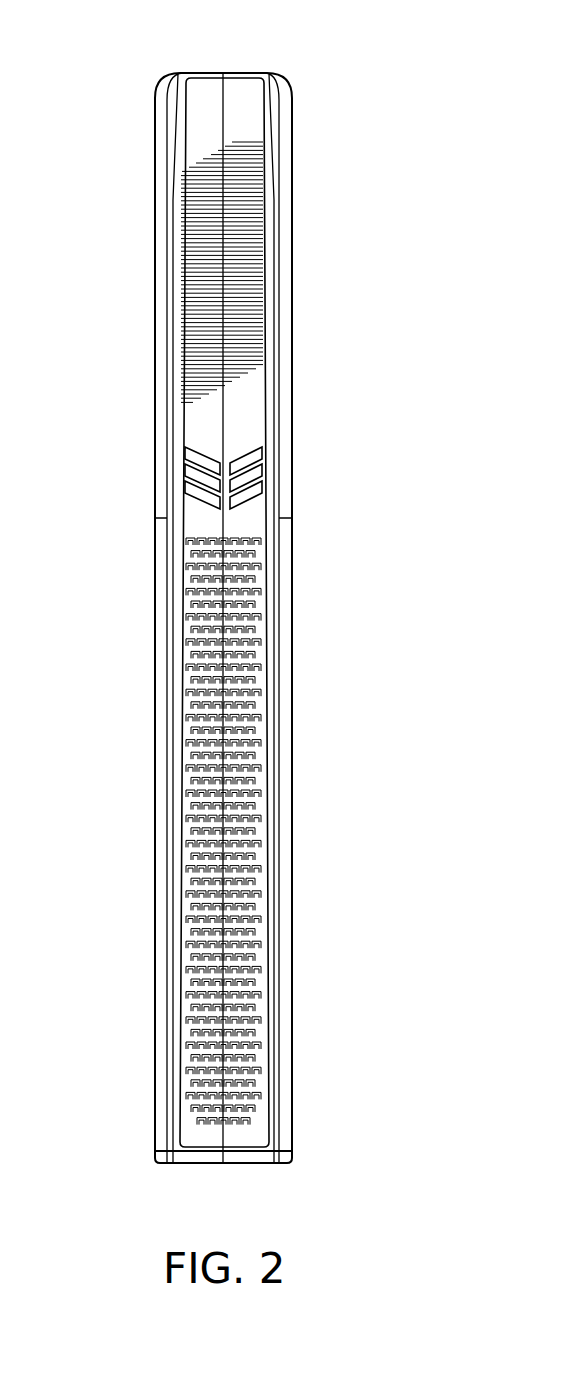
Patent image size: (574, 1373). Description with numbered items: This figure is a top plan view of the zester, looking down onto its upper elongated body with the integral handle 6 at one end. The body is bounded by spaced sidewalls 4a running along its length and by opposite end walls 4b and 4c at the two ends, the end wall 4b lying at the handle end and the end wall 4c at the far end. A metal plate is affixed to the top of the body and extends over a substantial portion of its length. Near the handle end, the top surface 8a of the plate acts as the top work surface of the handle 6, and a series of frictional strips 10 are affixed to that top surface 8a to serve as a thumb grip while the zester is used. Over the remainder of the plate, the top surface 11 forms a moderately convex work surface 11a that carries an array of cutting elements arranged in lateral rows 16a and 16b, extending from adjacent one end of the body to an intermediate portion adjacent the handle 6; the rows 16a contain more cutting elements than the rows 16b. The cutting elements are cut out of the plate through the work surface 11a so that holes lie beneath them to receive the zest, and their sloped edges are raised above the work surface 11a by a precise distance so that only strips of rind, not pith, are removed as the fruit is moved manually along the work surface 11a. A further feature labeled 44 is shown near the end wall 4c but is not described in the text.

The sidewall 4a is at (157, 597).
The end wall 4b is at (224, 72).
The end wall 4c is at (255, 1163).
The handle 6 is at (253, 135).
The top surface 8a is at (250, 258).
The frictional strips 10 is at (243, 460).
The top surface 11 is at (260, 642).
The work surface 11a is at (257, 901).
The lateral rows 16a is at (262, 772).
The lateral rows 16b is at (258, 733).
The bottom cell row 44 is at (247, 1125).